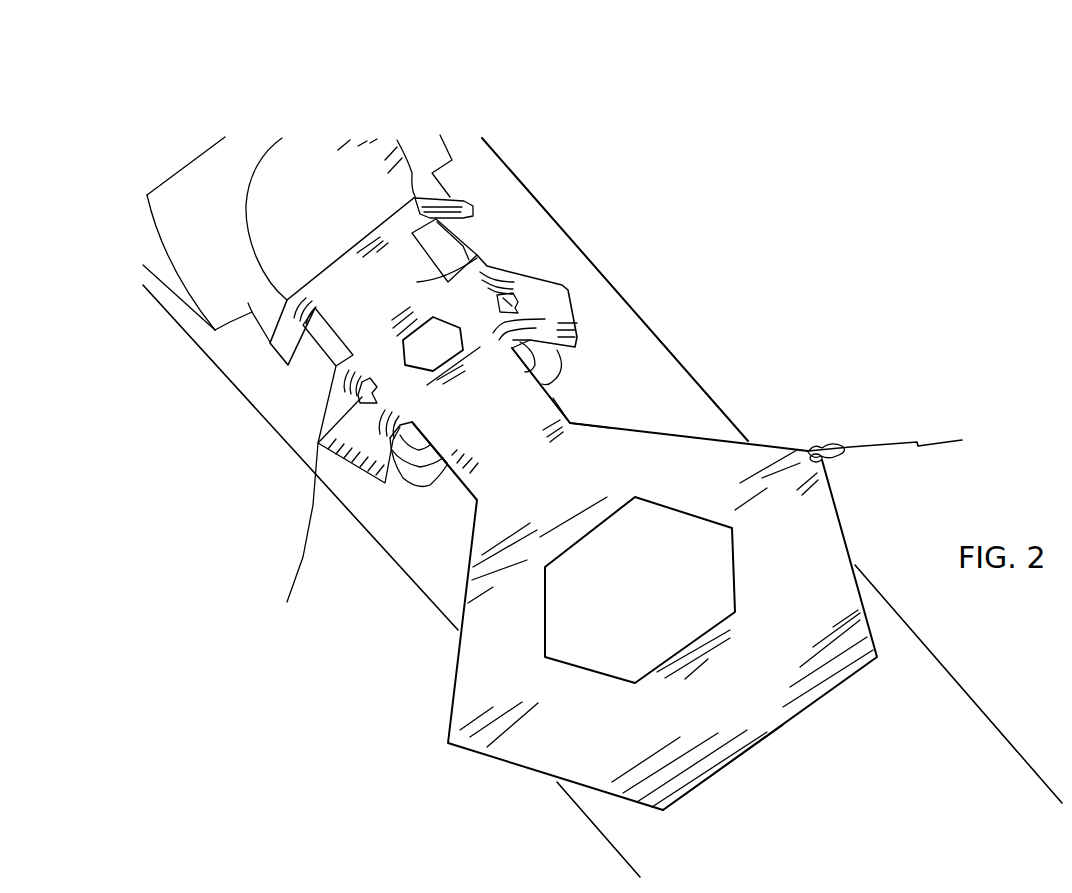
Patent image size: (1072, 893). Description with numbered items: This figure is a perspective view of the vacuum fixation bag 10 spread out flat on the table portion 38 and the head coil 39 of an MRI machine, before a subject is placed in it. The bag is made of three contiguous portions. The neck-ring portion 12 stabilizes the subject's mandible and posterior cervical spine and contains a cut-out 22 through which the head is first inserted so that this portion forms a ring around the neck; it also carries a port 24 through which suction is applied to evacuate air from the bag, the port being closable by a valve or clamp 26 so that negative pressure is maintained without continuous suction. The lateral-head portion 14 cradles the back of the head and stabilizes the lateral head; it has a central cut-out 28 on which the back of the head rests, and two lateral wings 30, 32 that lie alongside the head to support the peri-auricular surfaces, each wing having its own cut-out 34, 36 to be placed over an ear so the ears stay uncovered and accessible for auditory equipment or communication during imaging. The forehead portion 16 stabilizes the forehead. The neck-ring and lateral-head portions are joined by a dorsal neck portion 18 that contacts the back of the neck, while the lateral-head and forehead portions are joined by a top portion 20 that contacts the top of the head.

The vacuum fixation bag 10 is at (688, 587).
The neck-ring portion 12 is at (830, 542).
The lateral-head portion 14 is at (551, 298).
The forehead portion 16 is at (473, 208).
The dorsal neck portion 18 is at (543, 405).
The top portion 20 is at (475, 256).
The cut-out 22 is at (660, 614).
The port 24 is at (902, 438).
The valve or clamp 26 is at (843, 460).
The central cut-out 28 is at (445, 355).
The lateral wing 30 is at (560, 316).
The lateral wing 32 is at (287, 602).
The cut-out 34 is at (517, 298).
The cut-out 36 is at (318, 443).
The table portion 38 is at (913, 650).
The head coil 39 is at (300, 383).